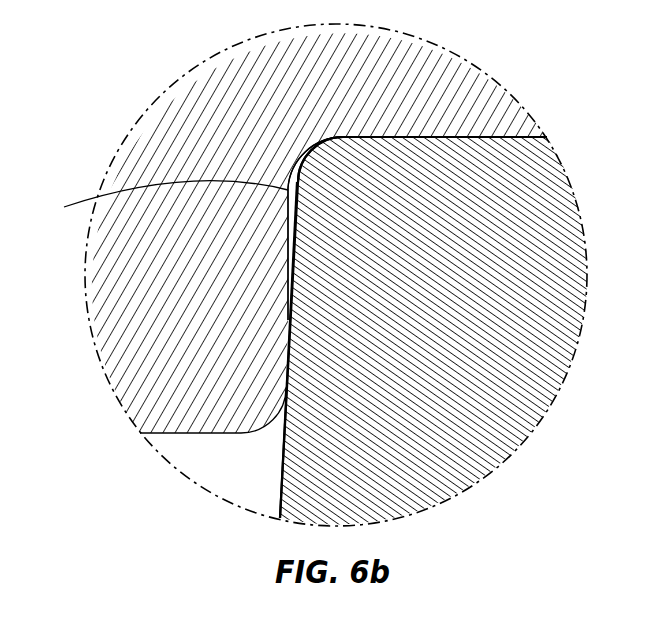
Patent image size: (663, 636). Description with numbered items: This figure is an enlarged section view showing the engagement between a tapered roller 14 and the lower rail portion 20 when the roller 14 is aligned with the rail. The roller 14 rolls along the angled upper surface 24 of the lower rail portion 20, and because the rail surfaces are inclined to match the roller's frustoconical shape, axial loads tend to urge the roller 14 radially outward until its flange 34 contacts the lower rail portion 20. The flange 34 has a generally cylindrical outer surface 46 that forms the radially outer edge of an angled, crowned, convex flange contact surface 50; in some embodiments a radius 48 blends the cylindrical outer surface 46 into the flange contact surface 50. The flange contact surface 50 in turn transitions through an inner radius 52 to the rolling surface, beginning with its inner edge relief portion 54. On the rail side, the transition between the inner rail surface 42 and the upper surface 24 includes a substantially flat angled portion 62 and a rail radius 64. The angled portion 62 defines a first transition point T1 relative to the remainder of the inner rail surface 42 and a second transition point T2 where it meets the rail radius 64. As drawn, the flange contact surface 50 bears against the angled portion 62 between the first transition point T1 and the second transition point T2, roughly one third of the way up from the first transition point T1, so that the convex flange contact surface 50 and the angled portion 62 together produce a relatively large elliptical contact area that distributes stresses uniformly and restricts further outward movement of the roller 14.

The tapered roller 14 is at (172, 155).
The lower rail portion 20 is at (507, 403).
The upper surface 24 is at (470, 126).
The flange 34 is at (133, 360).
The inner rail surface 42 is at (269, 495).
The cylindrical outer surface 46 is at (167, 446).
The radius 48 is at (258, 423).
The flange contact surface 50 is at (300, 352).
The inner radius 52 is at (300, 170).
The inner edge relief portion 54 is at (427, 150).
The angled portion 62 is at (275, 316).
The rail radius 64 is at (313, 147).
The first transition point T1 is at (280, 435).
The second transition point T2 is at (161, 203).